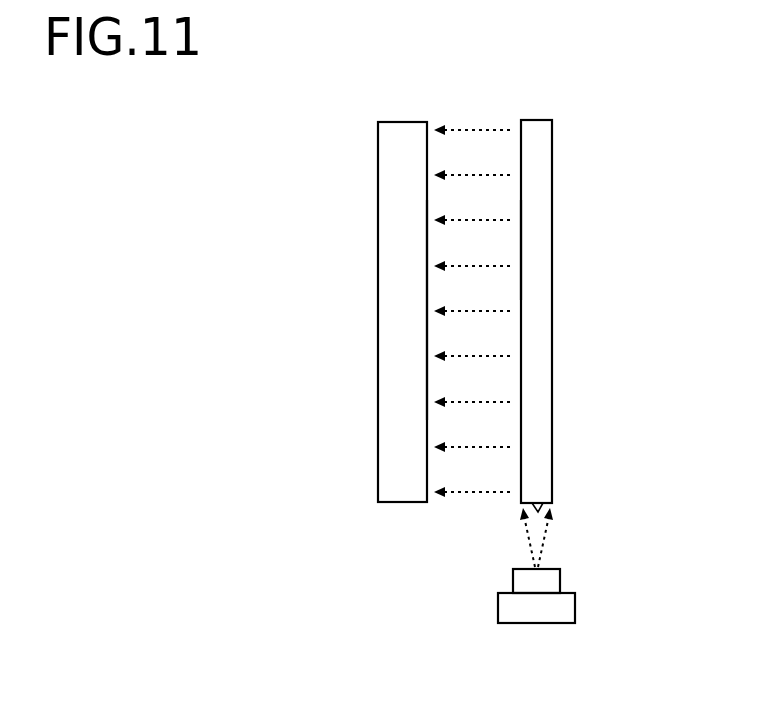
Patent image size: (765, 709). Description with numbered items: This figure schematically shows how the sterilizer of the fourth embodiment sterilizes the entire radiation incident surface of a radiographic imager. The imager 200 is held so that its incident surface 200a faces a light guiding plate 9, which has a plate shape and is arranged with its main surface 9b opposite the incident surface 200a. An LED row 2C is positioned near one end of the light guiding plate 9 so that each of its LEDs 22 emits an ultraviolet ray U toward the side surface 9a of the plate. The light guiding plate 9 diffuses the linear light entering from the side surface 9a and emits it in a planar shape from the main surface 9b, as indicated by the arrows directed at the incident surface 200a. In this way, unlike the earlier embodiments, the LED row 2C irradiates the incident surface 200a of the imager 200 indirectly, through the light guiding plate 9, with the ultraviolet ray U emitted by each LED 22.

The imager 200 is at (355, 270).
The incident surface 200a is at (428, 298).
The light guiding plate 9 is at (552, 113).
The side surface 9a is at (540, 510).
The main surface 9b is at (508, 250).
The ultraviolet ray U is at (475, 129).
The LED 22 is at (513, 583).
The LED row 2C is at (584, 607).